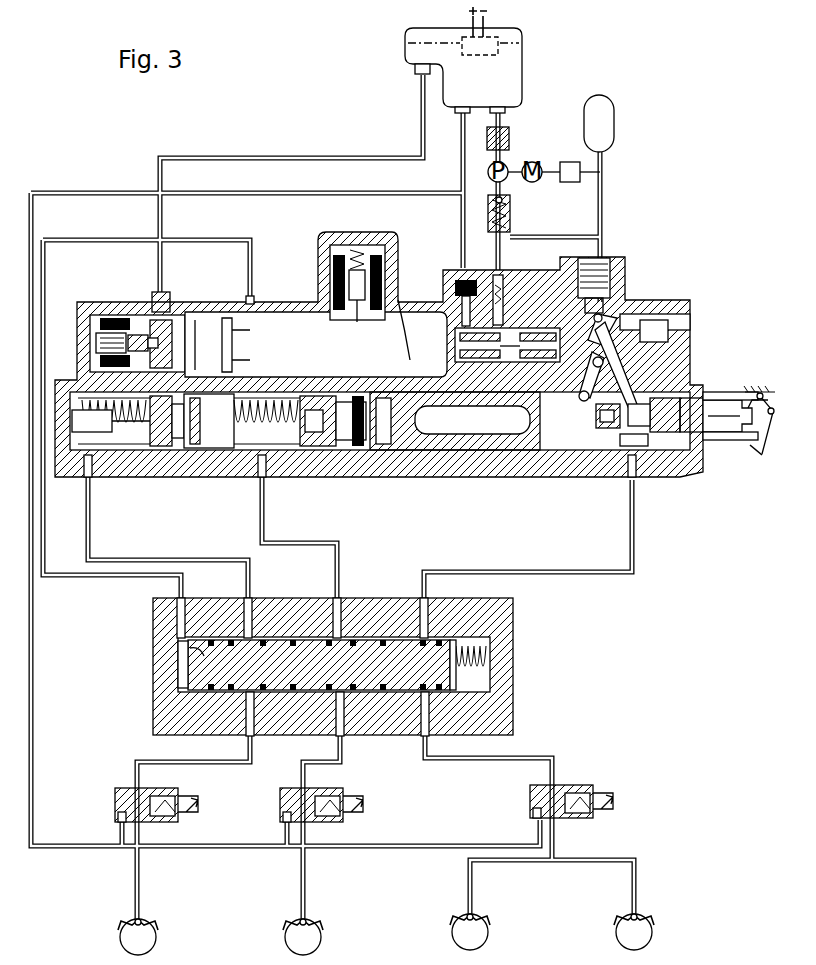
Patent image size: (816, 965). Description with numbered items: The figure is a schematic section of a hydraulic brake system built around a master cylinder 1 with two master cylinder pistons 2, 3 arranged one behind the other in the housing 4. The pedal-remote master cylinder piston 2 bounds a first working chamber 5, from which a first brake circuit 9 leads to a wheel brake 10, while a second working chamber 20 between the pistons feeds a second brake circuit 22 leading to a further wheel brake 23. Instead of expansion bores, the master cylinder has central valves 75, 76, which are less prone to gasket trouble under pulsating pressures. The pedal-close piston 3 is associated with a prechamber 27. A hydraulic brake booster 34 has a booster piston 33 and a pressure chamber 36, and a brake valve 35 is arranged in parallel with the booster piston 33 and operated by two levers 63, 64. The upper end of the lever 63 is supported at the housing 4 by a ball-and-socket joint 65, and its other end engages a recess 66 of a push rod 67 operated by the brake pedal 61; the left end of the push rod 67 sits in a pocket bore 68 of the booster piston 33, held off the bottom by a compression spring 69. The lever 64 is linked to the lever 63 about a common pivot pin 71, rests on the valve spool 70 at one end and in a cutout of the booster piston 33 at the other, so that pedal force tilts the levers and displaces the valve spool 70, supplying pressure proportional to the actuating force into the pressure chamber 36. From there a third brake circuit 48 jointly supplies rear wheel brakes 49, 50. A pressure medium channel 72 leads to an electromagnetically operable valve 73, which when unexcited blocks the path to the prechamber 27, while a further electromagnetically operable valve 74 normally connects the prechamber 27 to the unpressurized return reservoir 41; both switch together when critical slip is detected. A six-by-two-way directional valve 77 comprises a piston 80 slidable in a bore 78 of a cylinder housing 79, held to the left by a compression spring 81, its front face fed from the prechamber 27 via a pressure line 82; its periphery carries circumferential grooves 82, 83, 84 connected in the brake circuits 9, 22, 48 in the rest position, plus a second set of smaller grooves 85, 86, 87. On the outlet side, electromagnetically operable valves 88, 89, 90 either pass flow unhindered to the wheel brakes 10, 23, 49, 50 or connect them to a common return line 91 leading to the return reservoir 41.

The master cylinder 1 is at (320, 460).
The master cylinder piston 2 is at (192, 462).
The master cylinder piston 3 is at (388, 462).
The housing 4 is at (372, 462).
The first working chamber 5 is at (115, 470).
The first brake circuit 9 is at (88, 506).
The wheel brake 10 is at (155, 937).
The second working chamber 20 is at (292, 470).
The second brake circuit 22 is at (262, 506).
The wheel brake 23 is at (320, 937).
The prechamber 27 is at (272, 322).
The booster piston 33 is at (560, 445).
The hydraulic brake booster 34 is at (543, 468).
The brake valve 35 is at (515, 268).
The pressure chamber 36 is at (538, 367).
The return reservoir 41 is at (520, 62).
The third brake circuit 48 is at (640, 572).
The wheel brake 49 is at (487, 932).
The wheel brake 50 is at (651, 932).
The brake pedal 61 is at (766, 440).
The lever 63 is at (612, 345).
The lever 64 is at (604, 362).
The ball-and-socket joint 65 is at (612, 305).
The recess 66 is at (655, 478).
The push rod 67 is at (690, 462).
The pocket bore 68 is at (625, 445).
The compression spring 69 is at (612, 430).
The valve spool 70 is at (548, 300).
The pivot pin 71 is at (655, 382).
The pressure medium channel 72 is at (428, 360).
The electromagnetically operable valve 73 is at (362, 236).
The electromagnetically operable valve 74 is at (118, 298).
The central valve 75 is at (162, 462).
The central valve 76 is at (344, 462).
The 6/2-way valve 77 is at (338, 667).
The bore 78 is at (200, 686).
The cylinder housing 79 is at (500, 627).
The piston 80 is at (200, 668).
The compression spring 81 is at (492, 660).
The pressure line 82 is at (68, 578).
The circumferential groove 83 is at (345, 700).
The circumferential groove 84 is at (424, 700).
The circumferential groove 85 is at (225, 638).
The circumferential groove 86 is at (318, 638).
The circumferential groove 87 is at (402, 638).
The electromagnetically operable valve 88 is at (114, 806).
The electromagnetically operable valve 89 is at (280, 806).
The electromagnetically operable valve 90 is at (530, 806).
The common return line 91 is at (216, 850).